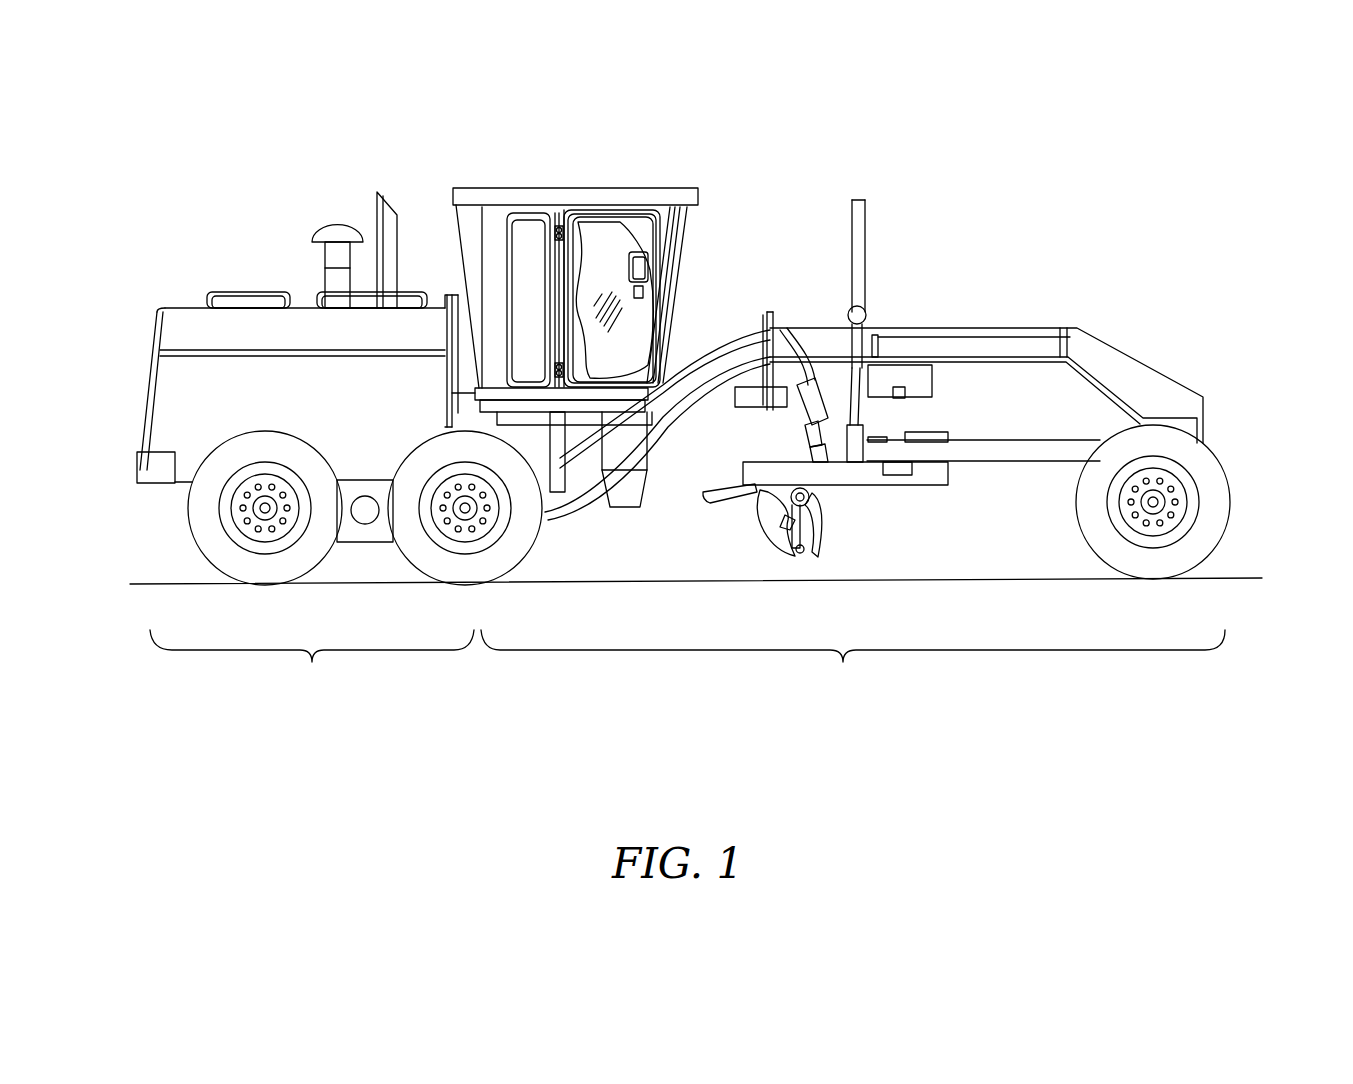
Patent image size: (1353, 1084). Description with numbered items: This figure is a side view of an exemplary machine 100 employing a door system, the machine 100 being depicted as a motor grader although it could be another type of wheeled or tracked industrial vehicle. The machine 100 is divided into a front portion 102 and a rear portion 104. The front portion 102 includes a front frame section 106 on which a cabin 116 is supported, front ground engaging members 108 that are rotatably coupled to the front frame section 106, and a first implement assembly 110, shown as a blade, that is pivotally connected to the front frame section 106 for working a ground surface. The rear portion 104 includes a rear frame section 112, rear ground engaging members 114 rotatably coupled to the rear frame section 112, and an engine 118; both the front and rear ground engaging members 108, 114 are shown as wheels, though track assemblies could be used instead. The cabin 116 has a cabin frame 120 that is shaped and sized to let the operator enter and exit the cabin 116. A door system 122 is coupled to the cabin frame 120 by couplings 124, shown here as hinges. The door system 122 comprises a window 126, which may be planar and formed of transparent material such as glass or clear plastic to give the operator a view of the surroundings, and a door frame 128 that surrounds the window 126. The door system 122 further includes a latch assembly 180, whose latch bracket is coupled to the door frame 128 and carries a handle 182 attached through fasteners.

The machine 100 is at (957, 158).
The front portion 102 is at (853, 659).
The rear portion 104 is at (312, 660).
The front frame section 106 is at (980, 327).
The front ground engaging members 108 is at (1228, 536).
The first implement assembly 110 is at (753, 522).
The rear frame section 112 is at (370, 560).
The rear ground engaging members 114 is at (192, 510).
The cabin 116 is at (650, 189).
The engine 118 is at (188, 308).
The cabin frame 120 is at (557, 218).
The door system 122 is at (603, 208).
The couplings 124 is at (573, 212).
The window 126 is at (624, 253).
The door frame 128 is at (624, 214).
The latch assembly 180 is at (643, 281).
The handle 182 is at (640, 247).